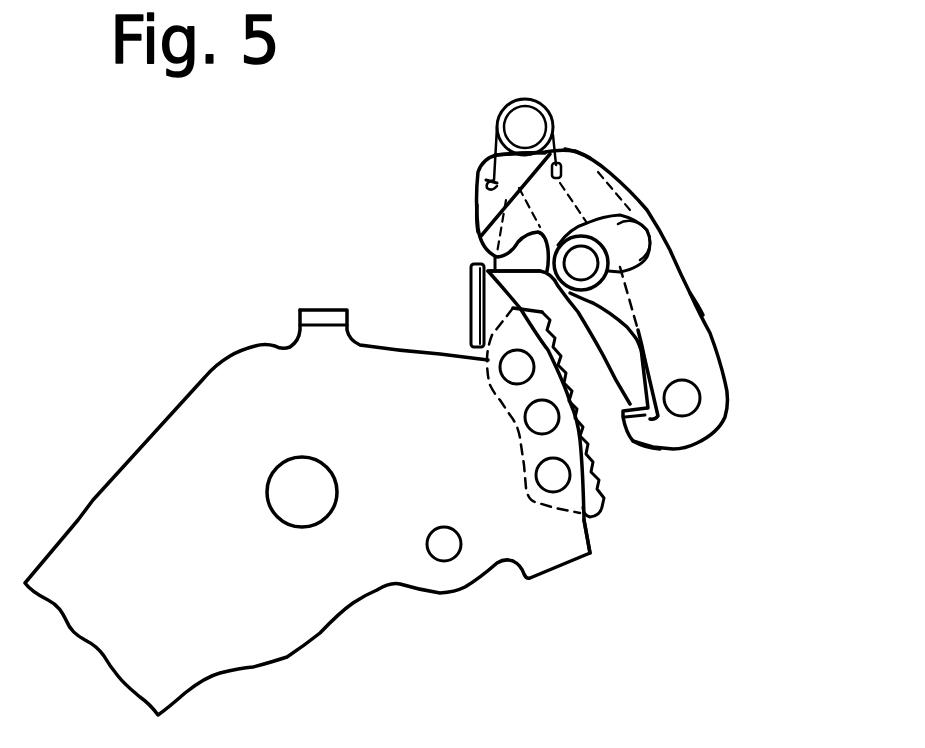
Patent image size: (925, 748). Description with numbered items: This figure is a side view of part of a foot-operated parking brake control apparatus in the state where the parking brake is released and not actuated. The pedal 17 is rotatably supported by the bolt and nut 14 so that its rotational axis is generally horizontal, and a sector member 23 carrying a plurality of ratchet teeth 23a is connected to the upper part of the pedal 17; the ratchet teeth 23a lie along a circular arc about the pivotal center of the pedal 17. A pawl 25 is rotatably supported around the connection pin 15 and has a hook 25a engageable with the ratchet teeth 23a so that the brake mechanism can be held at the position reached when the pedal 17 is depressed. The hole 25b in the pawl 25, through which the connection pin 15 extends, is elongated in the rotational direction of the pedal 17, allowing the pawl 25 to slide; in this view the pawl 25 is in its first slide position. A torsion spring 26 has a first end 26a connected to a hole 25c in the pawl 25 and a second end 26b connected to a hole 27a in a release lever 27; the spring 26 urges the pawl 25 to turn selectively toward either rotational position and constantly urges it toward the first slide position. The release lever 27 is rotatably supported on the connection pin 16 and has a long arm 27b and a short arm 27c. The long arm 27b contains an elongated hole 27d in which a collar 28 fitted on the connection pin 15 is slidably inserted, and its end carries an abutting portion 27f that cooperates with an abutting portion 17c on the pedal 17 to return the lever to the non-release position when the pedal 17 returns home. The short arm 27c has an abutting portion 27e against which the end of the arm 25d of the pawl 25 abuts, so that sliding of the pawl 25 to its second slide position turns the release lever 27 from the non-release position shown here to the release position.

The bolt and nut 14 is at (313, 513).
The connection pin 15 is at (612, 251).
The connection pin 16 is at (693, 403).
The pedal 17 is at (293, 628).
The abutting portion 17c is at (470, 300).
The sector member 23 is at (600, 517).
The ratchet teeth 23a is at (597, 450).
The pawl 25 is at (483, 185).
The hook 25a is at (480, 247).
The hole 25b is at (615, 182).
The hole 25c is at (488, 180).
The arm 25d is at (633, 368).
The torsion spring 26 is at (533, 98).
The first end 26a is at (487, 167).
The second end 26b is at (585, 157).
The release lever 27 is at (722, 383).
The hole 27a is at (583, 247).
The long arm 27b is at (687, 313).
The short arm 27c is at (687, 430).
The elongated hole 27d is at (640, 263).
The abutting portion 27e is at (648, 428).
The abutting portion 27f is at (478, 225).
The collar 28 is at (592, 247).